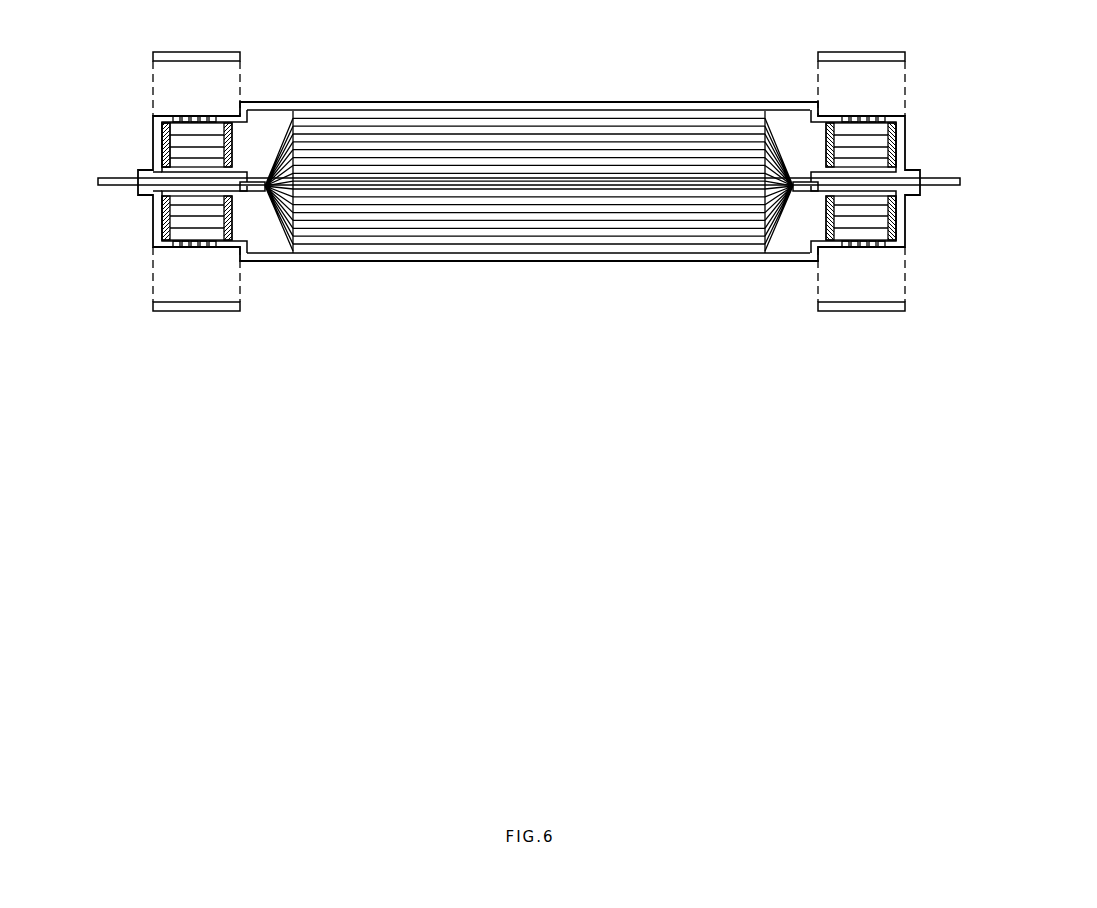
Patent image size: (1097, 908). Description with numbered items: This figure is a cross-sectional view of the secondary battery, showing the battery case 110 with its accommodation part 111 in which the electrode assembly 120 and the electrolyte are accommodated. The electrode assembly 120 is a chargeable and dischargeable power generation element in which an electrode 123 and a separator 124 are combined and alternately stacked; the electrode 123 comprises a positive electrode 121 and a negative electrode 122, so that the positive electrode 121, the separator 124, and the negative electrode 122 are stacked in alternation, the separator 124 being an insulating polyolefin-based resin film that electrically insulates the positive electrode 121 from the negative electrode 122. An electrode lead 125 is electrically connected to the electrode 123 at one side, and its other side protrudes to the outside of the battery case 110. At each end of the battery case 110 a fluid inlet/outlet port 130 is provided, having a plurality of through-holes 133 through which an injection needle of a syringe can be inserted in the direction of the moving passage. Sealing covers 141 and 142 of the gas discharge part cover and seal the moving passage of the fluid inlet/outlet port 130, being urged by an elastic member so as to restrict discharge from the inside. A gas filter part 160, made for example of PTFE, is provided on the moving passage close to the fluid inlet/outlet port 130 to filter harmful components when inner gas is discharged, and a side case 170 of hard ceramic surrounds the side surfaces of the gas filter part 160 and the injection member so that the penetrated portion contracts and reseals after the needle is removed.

The battery case 110 is at (504, 88).
The accommodation part 111 is at (284, 124).
The electrode assembly 120 is at (529, 122).
The positive electrode 121 is at (682, 123).
The negative electrode 122 is at (728, 137).
The electrode 123 is at (529, 139).
The separator 124 is at (633, 115).
The electrode lead 125 is at (100, 178).
The fluid inlet/outlet port 130 is at (245, 132).
The through-holes 133 is at (197, 116).
The sealing cover 141 is at (197, 52).
The sealing cover 142 is at (197, 311).
The gas filter part 160 is at (172, 186).
The side case 170 is at (162, 150).